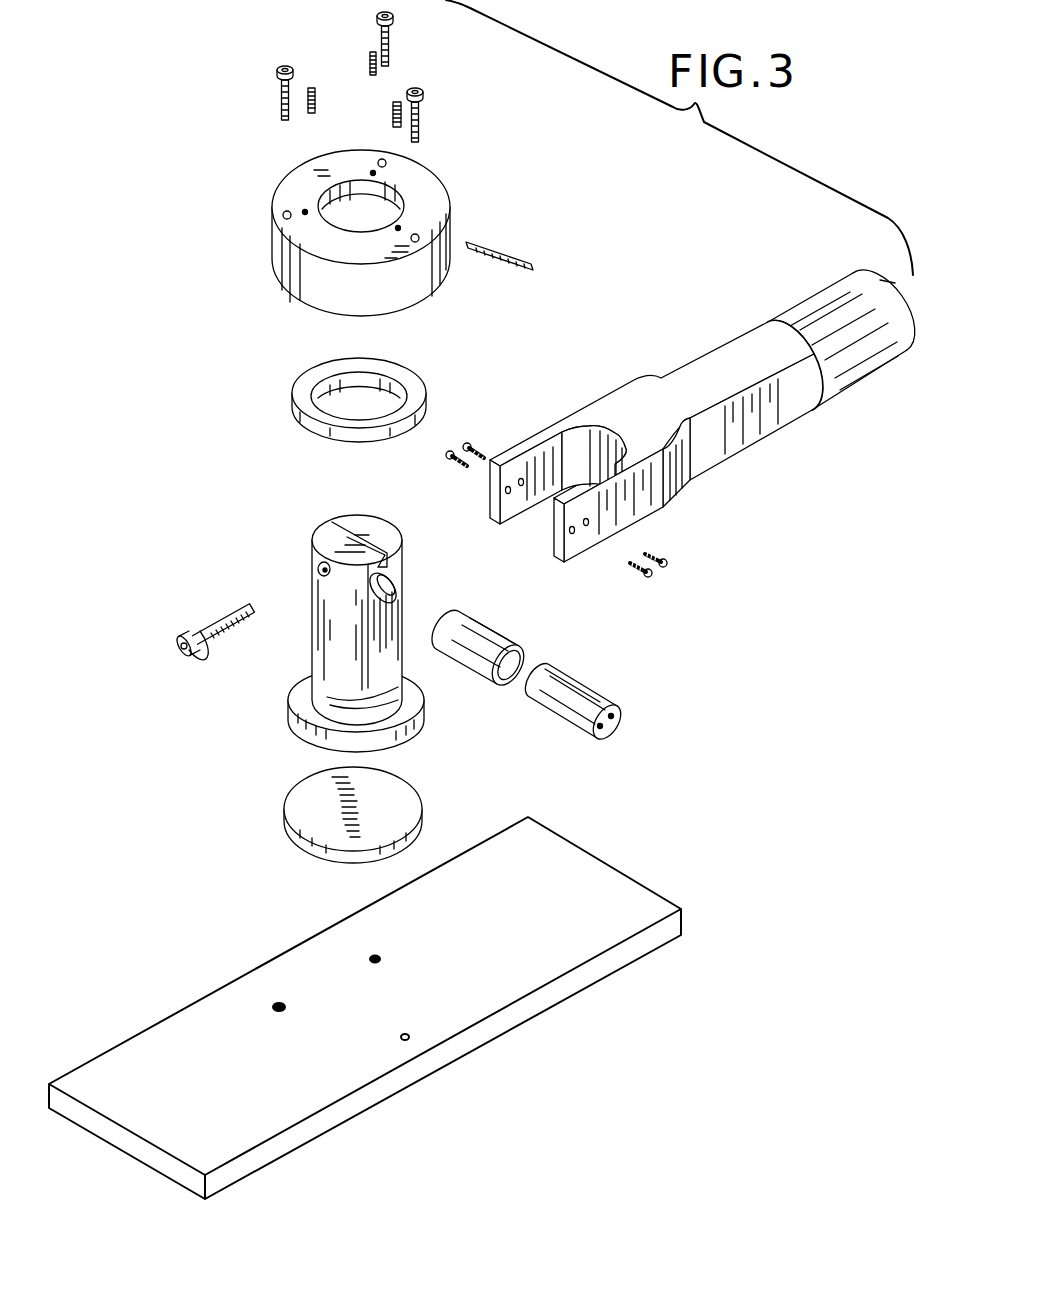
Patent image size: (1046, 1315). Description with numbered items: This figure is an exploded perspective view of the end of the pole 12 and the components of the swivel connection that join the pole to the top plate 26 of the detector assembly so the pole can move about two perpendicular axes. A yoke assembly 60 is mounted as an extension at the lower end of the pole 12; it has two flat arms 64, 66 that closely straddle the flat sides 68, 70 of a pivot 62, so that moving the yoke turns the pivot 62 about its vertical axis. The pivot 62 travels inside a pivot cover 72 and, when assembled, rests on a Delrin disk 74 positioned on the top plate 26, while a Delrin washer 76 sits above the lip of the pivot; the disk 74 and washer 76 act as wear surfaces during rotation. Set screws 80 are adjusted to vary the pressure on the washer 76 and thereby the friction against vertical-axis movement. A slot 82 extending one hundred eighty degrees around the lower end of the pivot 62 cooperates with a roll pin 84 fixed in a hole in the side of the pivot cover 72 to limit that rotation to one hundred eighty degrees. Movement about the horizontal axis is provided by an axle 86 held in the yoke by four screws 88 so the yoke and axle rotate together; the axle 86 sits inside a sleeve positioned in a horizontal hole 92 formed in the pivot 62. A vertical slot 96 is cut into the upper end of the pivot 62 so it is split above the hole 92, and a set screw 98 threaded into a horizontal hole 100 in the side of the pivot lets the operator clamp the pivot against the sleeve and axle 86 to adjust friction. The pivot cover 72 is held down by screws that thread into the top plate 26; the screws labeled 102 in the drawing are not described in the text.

The pole 12 is at (840, 387).
The top plate 26 is at (352, 1053).
The yoke assembly 60 is at (726, 461).
The pivot 62 is at (356, 608).
The flat arm 64 is at (590, 545).
The flat arm 66 is at (538, 433).
The flat side 68 is at (399, 608).
The flat side 70 is at (358, 595).
The pivot cover 72 is at (287, 256).
The Delrin disk 74 is at (307, 792).
The Delrin washer 76 is at (307, 410).
The set screws 80 is at (353, 63).
The slot 82 is at (400, 692).
The roll pin 84 is at (502, 248).
The axle 86 is at (585, 693).
The screws 88 is at (470, 446).
The horizontal hole 92 is at (398, 586).
The vertical slot 96 is at (352, 522).
The set screw 98 is at (214, 622).
The horizontal hole 100 is at (320, 574).
The screws 102 is at (281, 98).